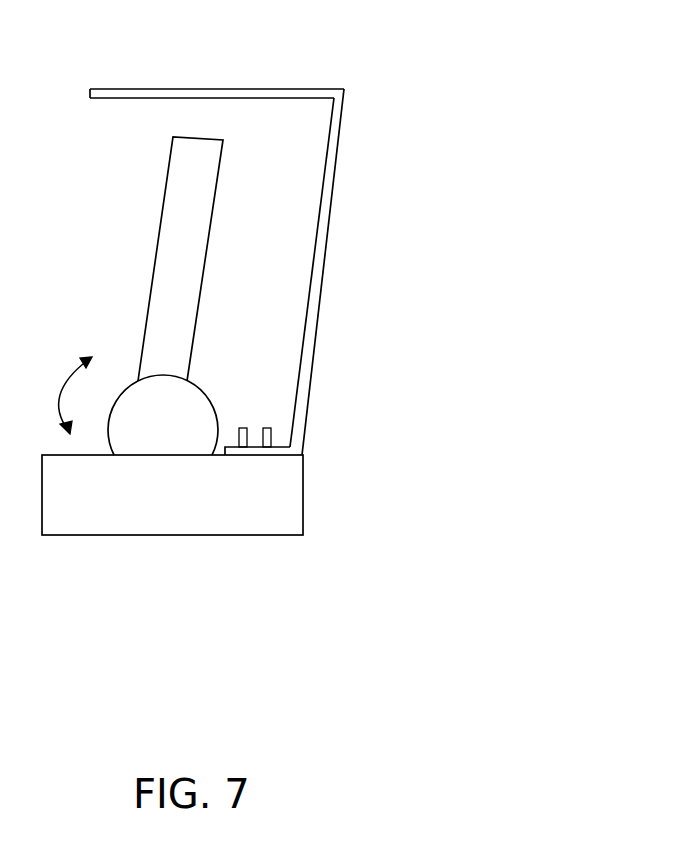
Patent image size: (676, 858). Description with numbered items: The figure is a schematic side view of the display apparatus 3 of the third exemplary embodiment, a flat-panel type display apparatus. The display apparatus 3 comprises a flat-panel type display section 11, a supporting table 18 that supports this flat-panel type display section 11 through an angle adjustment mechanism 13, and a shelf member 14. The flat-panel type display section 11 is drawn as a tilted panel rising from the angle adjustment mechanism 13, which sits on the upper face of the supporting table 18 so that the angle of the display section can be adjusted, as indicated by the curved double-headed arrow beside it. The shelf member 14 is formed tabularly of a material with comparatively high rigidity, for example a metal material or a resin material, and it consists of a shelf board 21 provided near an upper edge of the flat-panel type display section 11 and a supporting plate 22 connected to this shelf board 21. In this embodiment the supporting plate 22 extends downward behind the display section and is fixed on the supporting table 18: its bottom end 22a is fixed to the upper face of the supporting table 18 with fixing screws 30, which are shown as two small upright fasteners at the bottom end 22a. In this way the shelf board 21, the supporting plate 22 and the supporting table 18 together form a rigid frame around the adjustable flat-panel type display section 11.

The display apparatus 3 is at (313, 627).
The flat-panel type display section 11 is at (164, 229).
The angle adjustment mechanism 13 is at (130, 408).
The shelf member 14 is at (314, 90).
The supporting table 18 is at (285, 500).
The shelf board 21 is at (168, 88).
The supporting plate 22 is at (325, 223).
The bottom end 22a is at (255, 449).
The fixing screws 30 is at (267, 426).